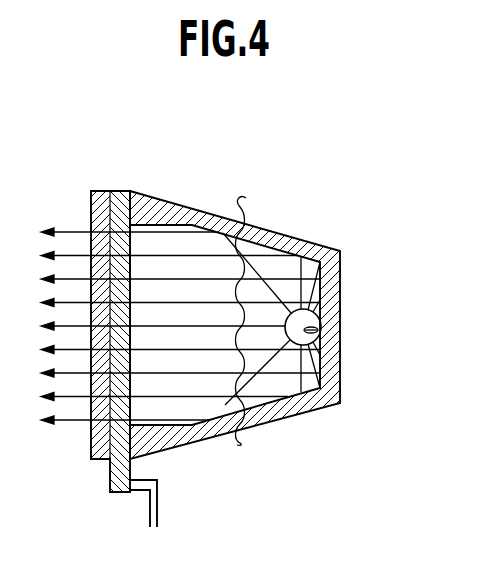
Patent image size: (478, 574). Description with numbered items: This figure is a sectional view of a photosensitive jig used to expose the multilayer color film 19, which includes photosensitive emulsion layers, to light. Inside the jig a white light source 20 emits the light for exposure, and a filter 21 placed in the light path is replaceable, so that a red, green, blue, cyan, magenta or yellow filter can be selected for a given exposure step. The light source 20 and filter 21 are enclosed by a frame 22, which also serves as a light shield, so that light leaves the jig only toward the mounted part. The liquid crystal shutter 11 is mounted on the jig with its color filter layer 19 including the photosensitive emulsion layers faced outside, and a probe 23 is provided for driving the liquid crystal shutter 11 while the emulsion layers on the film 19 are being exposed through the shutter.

The liquid crystal shutter 11 is at (130, 192).
The multilayer color film 19 is at (91, 192).
The white light source 20 is at (313, 331).
The filter 21 is at (253, 420).
The frame 22 is at (308, 405).
The probe 23 is at (157, 517).